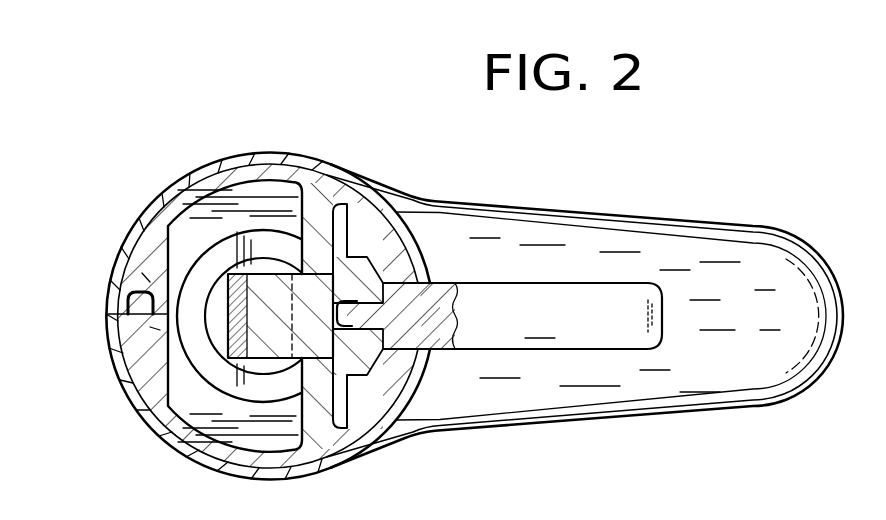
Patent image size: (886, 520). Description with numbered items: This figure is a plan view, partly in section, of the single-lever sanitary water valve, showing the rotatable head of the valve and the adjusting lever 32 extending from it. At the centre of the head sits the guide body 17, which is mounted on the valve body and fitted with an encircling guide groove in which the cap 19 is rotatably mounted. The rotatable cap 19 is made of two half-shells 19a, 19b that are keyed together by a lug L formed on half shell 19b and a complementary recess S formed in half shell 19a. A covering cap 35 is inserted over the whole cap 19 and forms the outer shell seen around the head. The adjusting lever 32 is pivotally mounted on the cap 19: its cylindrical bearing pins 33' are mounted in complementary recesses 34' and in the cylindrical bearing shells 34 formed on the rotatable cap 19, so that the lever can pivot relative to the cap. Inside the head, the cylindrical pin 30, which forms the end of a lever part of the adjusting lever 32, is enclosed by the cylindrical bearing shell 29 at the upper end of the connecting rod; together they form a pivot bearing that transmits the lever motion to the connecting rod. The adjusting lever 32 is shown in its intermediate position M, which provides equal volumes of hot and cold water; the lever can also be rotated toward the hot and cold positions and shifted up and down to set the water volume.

The guide body 17 is at (226, 252).
The cap 19 is at (156, 251).
The half shell 19a is at (142, 273).
The half shell 19b is at (170, 318).
The cylindrical bearing shell 29 is at (178, 350).
The cylindrical pin 30 is at (206, 444).
The adjusting lever 32 is at (598, 292).
The cylindrical bearing pins 33' is at (337, 318).
The cylindrical bearing shell 34 is at (415, 317).
The complementary recesses 34' is at (368, 318).
The covering cap 35 is at (268, 152).
The lug L is at (112, 314).
The intermediate position M is at (668, 299).
The recess S is at (158, 284).